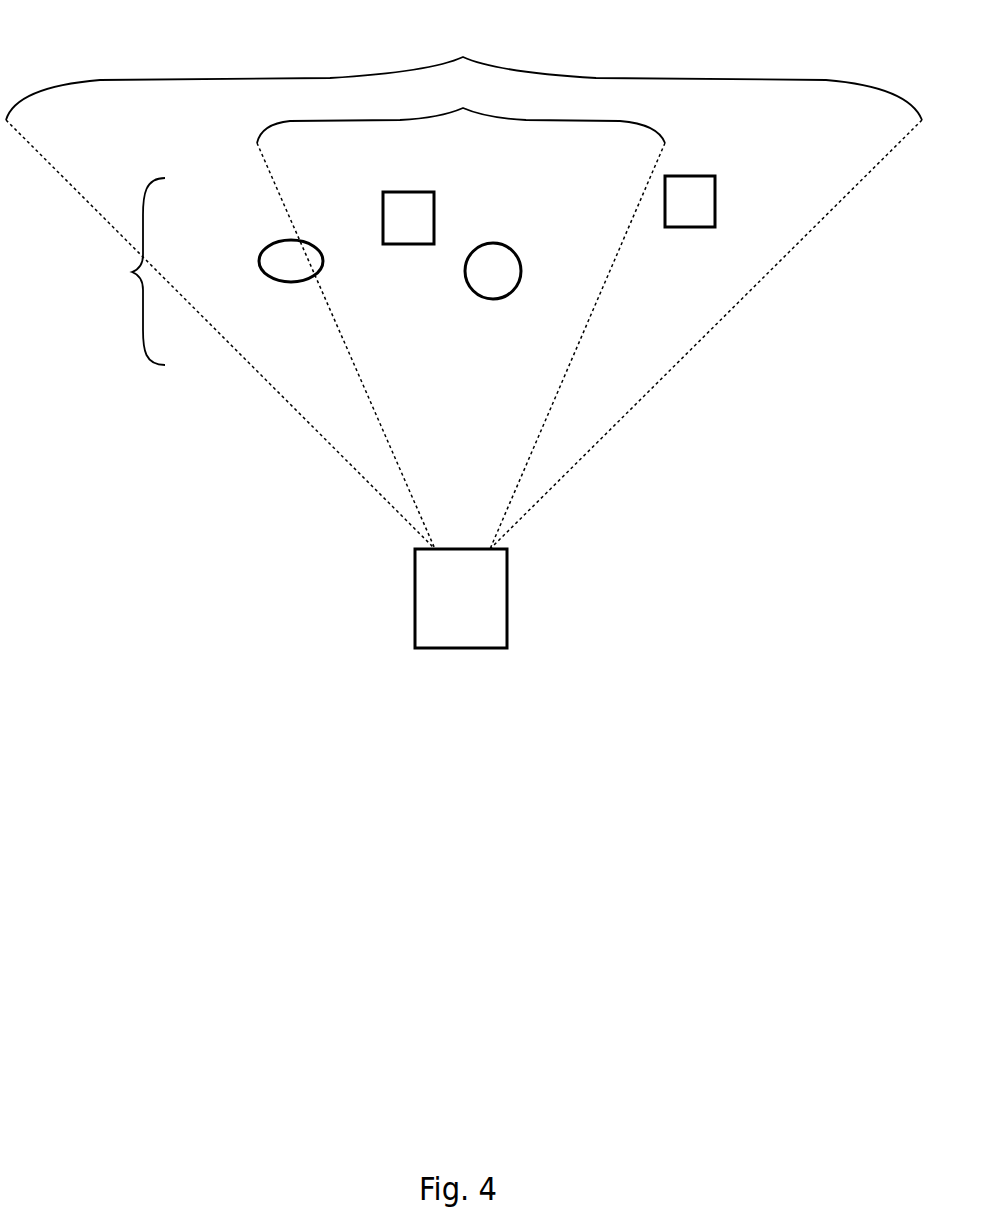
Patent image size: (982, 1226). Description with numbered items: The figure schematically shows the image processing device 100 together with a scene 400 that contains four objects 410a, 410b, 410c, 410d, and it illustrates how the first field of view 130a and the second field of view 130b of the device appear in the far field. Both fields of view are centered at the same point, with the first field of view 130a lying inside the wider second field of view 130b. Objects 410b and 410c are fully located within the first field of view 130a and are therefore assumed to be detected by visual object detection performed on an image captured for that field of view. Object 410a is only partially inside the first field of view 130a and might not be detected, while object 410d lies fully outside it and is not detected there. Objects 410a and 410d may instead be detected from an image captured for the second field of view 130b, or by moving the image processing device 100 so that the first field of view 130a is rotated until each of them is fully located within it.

The image processing device 100 is at (484, 612).
The first field of view 130a is at (461, 111).
The second field of view 130b is at (464, 70).
The scene 400 is at (118, 271).
The object 410a is at (323, 267).
The object 410b is at (434, 221).
The object 410c is at (522, 272).
The object 410d is at (715, 203).